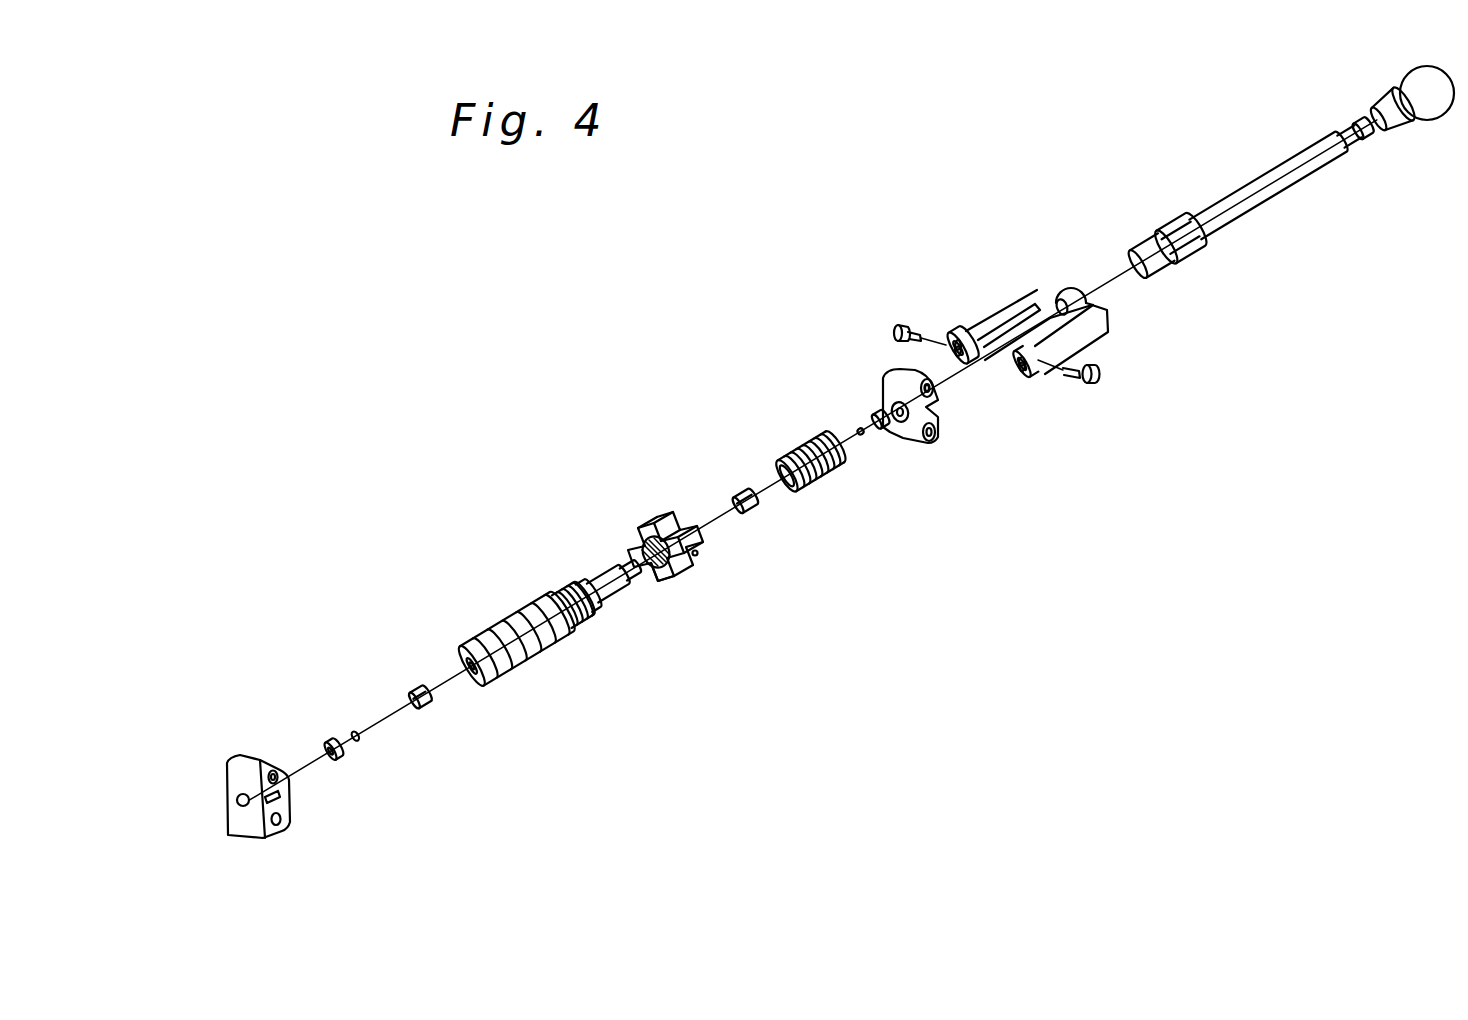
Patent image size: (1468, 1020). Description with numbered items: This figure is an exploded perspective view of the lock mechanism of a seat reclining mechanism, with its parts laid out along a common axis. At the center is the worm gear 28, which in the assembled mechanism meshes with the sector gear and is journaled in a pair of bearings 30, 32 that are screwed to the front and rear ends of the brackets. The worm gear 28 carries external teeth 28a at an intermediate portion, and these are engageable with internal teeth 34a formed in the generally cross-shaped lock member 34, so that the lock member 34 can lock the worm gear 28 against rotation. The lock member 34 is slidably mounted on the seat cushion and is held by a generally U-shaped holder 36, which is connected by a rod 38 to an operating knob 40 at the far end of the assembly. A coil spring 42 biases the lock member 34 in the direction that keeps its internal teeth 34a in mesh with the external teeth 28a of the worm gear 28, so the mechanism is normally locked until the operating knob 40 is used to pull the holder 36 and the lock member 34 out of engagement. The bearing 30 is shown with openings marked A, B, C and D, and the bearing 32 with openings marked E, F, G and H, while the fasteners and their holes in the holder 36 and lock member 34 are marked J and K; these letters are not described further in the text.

The worm gear 28 is at (533, 662).
The external teeth 28a is at (585, 610).
The bearing 30 is at (487, 758).
The bearing 32 is at (940, 448).
The lock member 34 is at (688, 579).
The internal teeth 34a is at (664, 583).
The holder 36 is at (1087, 330).
The rod 38 is at (1250, 213).
The operating knob 40 is at (1440, 112).
The coil spring 42 is at (780, 462).
The hole A is at (228, 766).
The hole B is at (230, 806).
The hole C is at (288, 780).
The hole D is at (290, 823).
The hole E is at (924, 388).
The hole F is at (882, 423).
The hole G is at (934, 393).
The hole H is at (935, 431).
The pin J is at (616, 533).
The pin K is at (1040, 368).